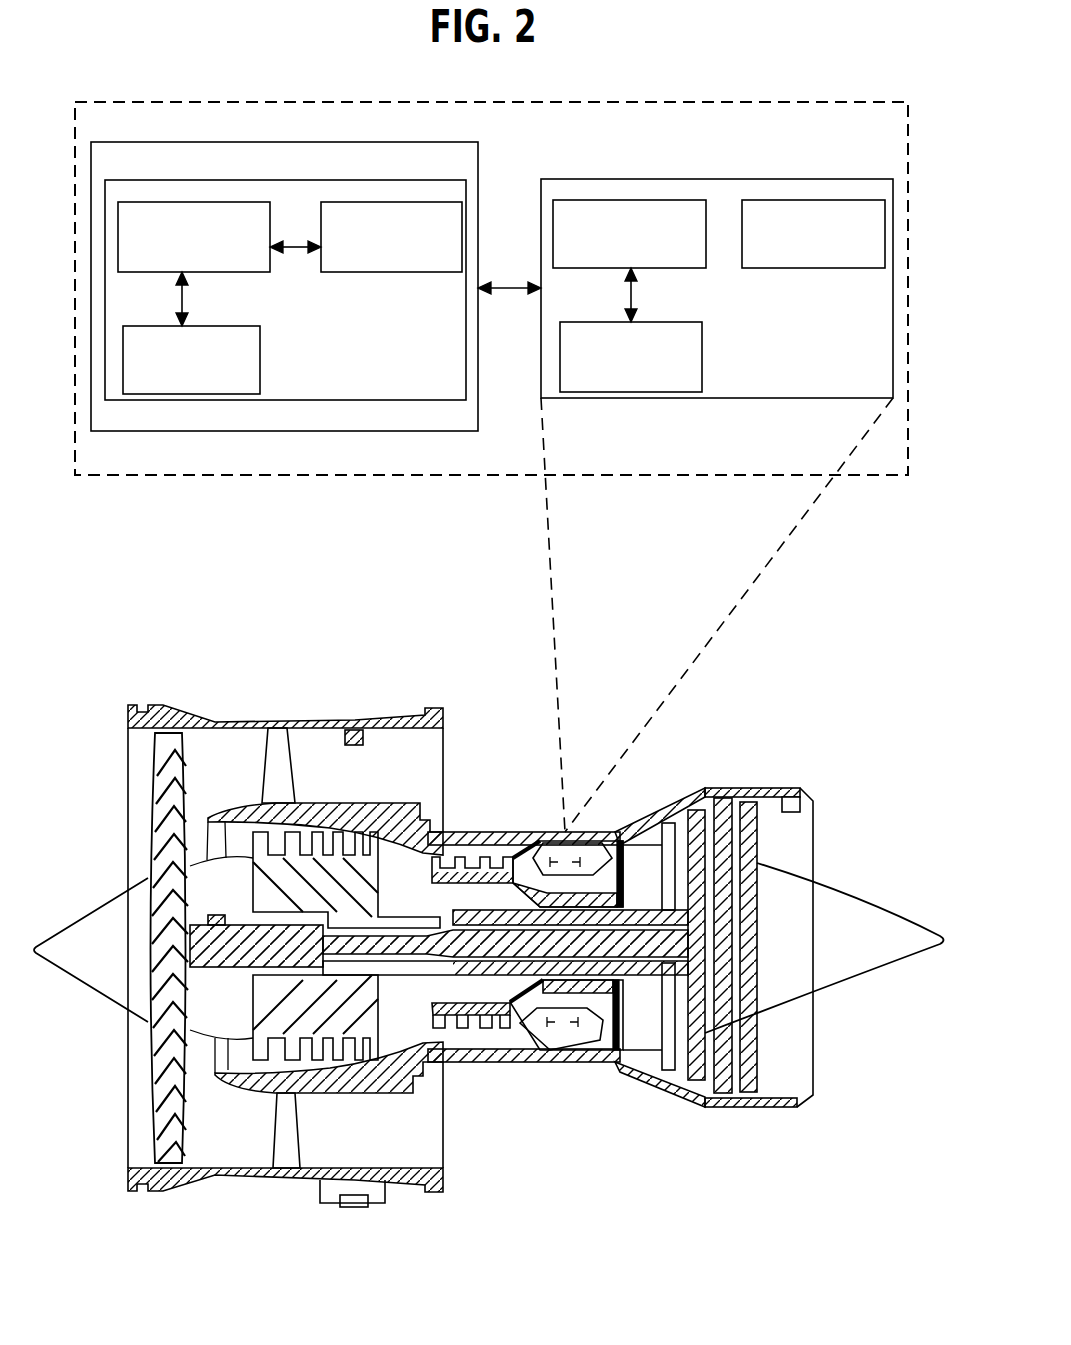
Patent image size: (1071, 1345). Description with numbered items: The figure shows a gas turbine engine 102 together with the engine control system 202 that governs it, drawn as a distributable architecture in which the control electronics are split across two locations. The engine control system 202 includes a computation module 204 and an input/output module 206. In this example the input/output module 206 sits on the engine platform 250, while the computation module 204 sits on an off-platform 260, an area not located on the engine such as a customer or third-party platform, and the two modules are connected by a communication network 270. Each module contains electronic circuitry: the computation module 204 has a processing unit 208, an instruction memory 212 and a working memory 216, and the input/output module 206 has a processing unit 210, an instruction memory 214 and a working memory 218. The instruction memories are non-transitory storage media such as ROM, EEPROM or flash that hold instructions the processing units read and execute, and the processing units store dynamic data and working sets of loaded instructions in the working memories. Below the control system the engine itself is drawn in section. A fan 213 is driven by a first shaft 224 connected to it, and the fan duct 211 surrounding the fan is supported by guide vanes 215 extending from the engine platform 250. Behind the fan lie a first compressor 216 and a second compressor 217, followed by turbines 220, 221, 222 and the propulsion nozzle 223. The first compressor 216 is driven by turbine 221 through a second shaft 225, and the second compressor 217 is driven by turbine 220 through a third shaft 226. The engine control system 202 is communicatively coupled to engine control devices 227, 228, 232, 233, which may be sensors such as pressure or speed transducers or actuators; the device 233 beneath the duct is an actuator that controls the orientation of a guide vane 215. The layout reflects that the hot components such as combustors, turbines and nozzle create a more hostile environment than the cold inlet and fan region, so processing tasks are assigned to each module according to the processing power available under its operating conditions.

The engine control system 202 is at (150, 58).
The off-platform 260 is at (140, 142).
The computation module 204 is at (365, 180).
The processing unit 208 is at (227, 272).
The instruction memory 212 is at (368, 272).
The working memory 216 is at (263, 362).
The communication network 270 is at (498, 283).
The input/output module 206 is at (800, 179).
The processing unit 210 is at (640, 200).
The instruction memory 214 is at (808, 200).
The working memory 218 is at (702, 363).
The gas turbine engine 102 is at (790, 640).
The fan duct 211 is at (220, 1177).
The fan 213 is at (172, 770).
The guide vanes 215 is at (280, 742).
The engine control device 227 is at (348, 727).
The engine control device 232 is at (220, 917).
The first shaft 224 is at (213, 1000).
The second compressor 217 is at (470, 1028).
The turbine 220 is at (620, 855).
The engine platform 250 is at (493, 832).
The third shaft 226 is at (557, 985).
The second shaft 225 is at (647, 967).
The turbine 221 is at (675, 808).
The turbine 222 is at (720, 802).
The engine control device 228 is at (785, 797).
The propulsion nozzle 223 is at (813, 852).
The actuator 233 is at (353, 1207).